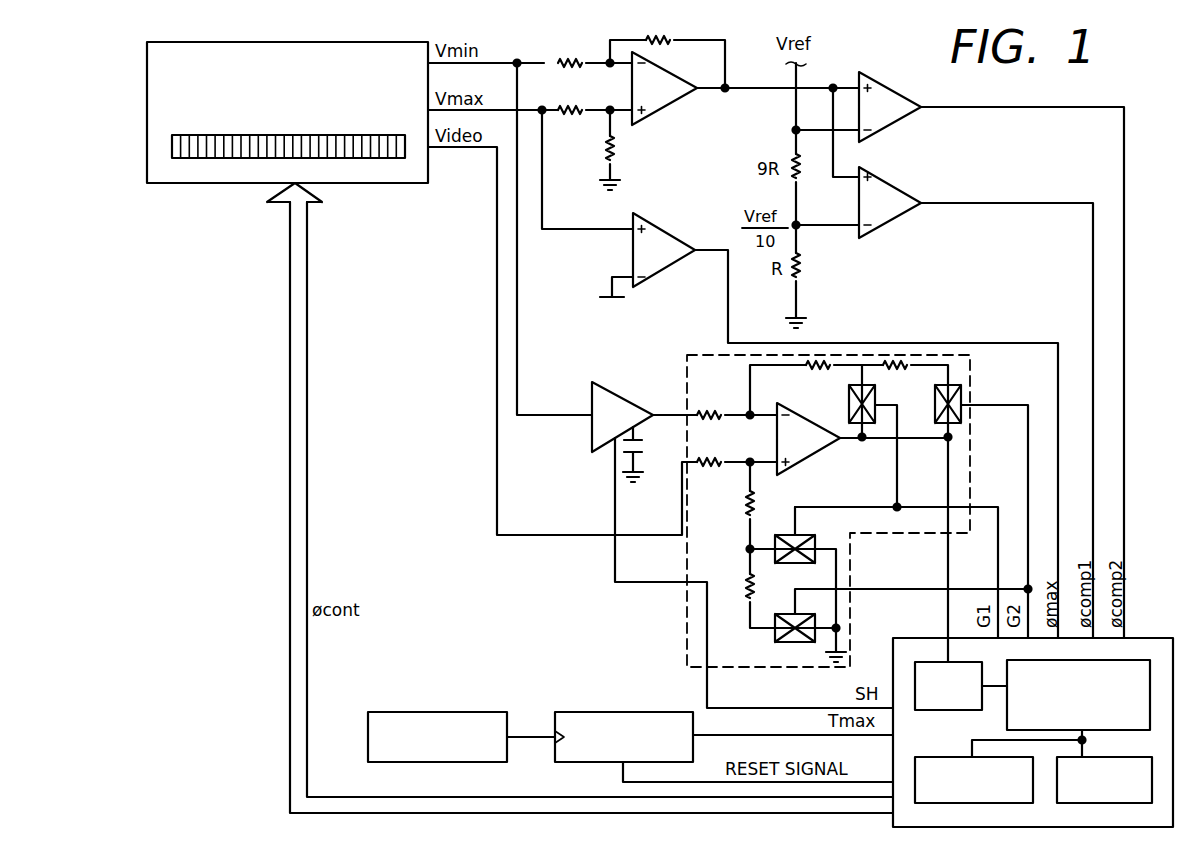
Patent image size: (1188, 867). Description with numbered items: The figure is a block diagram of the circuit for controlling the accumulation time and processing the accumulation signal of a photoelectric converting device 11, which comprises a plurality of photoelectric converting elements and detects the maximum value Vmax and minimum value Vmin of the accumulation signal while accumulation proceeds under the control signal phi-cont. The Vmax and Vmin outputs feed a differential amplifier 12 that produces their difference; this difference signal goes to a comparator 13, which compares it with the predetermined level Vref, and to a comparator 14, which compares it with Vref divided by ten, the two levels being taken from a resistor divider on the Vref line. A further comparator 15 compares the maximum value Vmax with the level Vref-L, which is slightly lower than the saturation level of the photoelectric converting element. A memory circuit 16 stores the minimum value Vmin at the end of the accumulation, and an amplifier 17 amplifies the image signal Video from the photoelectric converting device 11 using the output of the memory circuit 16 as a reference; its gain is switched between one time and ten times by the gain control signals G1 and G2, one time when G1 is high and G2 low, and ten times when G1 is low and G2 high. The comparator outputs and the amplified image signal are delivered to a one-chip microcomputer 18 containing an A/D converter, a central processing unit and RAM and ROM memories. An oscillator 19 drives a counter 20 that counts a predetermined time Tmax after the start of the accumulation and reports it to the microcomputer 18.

The photoelectric converting device 11 is at (395, 42).
The differential amplifier 12 is at (684, 85).
The comparator 13 is at (904, 92).
The comparator 14 is at (906, 182).
The comparator 15 is at (678, 232).
The memory circuit 16 is at (624, 392).
The amplifier 17 is at (972, 378).
The one-chip microcomputer 18 is at (1144, 638).
The oscillator 19 is at (475, 712).
The counter 20 is at (663, 712).